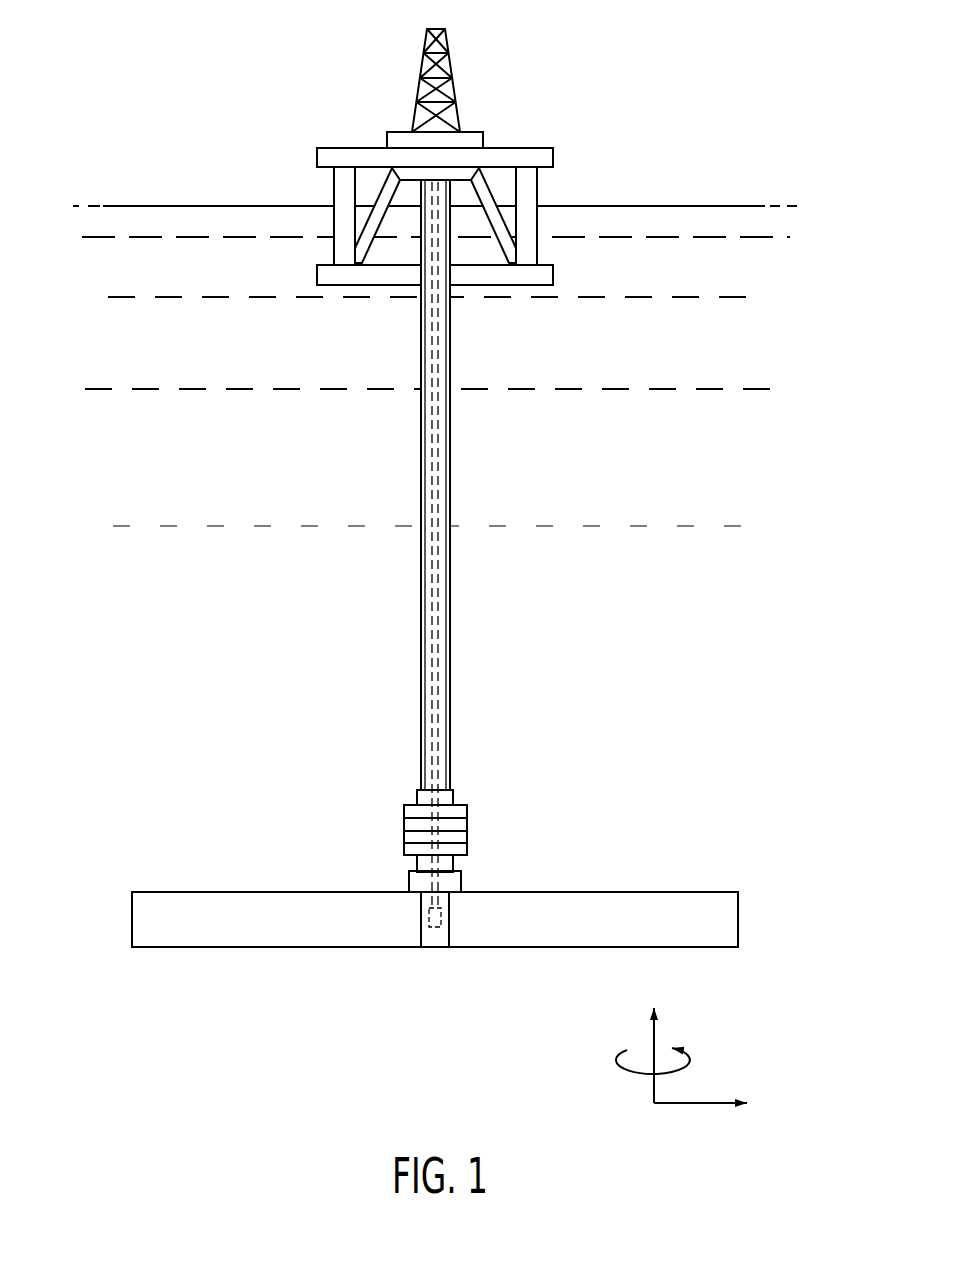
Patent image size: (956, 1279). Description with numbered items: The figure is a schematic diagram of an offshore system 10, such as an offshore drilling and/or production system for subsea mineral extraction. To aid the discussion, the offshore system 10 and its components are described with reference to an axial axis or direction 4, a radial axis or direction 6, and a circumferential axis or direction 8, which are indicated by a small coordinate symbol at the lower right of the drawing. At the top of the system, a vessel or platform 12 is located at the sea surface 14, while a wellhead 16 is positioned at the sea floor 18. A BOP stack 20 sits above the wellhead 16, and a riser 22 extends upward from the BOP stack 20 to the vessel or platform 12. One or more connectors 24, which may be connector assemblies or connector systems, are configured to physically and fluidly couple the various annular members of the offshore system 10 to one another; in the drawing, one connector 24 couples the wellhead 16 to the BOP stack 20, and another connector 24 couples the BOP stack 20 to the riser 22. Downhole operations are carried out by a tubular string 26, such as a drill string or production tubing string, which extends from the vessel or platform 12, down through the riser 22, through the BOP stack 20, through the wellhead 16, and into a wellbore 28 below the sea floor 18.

The offshore system 10 is at (633, 75).
The vessel or platform 12 is at (469, 132).
The sea surface 14 is at (672, 202).
The wellhead 16 is at (409, 879).
The sea floor 18 is at (582, 892).
The BOP stack 20 is at (467, 826).
The riser 22 is at (450, 668).
The connector 24 is at (453, 799).
The tubular string 26 is at (439, 721).
The wellbore 28 is at (447, 934).
The axial axis or direction 4 is at (652, 1042).
The radial axis or direction 6 is at (695, 1103).
The circumferential axis or direction 8 is at (632, 1073).